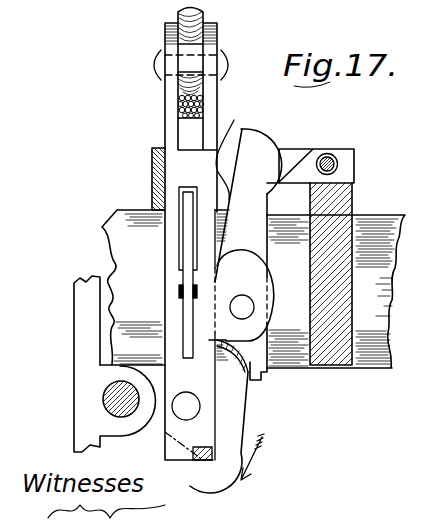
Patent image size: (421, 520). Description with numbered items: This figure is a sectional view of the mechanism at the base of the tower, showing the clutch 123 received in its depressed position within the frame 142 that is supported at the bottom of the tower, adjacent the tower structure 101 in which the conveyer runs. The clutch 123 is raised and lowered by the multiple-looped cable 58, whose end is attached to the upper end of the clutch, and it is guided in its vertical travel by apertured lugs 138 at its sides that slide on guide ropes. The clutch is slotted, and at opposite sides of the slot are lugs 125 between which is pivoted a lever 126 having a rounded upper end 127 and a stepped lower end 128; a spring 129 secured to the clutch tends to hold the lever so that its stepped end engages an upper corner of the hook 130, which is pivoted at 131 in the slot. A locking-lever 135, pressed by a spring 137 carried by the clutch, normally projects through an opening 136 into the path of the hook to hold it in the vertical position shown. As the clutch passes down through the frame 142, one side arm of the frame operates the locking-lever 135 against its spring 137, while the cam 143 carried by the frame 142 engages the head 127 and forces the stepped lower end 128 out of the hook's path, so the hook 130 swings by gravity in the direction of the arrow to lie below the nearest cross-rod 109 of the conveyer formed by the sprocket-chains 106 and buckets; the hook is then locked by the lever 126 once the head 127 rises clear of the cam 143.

The multiple-looped cable 58 is at (178, 101).
The casing body 101 is at (372, 215).
The endless sprocket-chains 106 is at (76, 323).
The horizontal rods 109 is at (103, 403).
The clutch 123 is at (185, 153).
The lugs 125 is at (241, 295).
The lever 126 is at (241, 254).
The rounded upper end 127 is at (259, 143).
The stepped lower end 128 is at (261, 383).
The spring 129 is at (239, 148).
The hook 130 is at (243, 478).
The pivot of hook 131 is at (196, 412).
The locking-lever 135 is at (181, 315).
The opening 136 is at (182, 413).
The spring 137 is at (181, 236).
The apertured lugs 138 is at (214, 461).
The frame 142 is at (152, 161).
The cam 143 is at (303, 160).